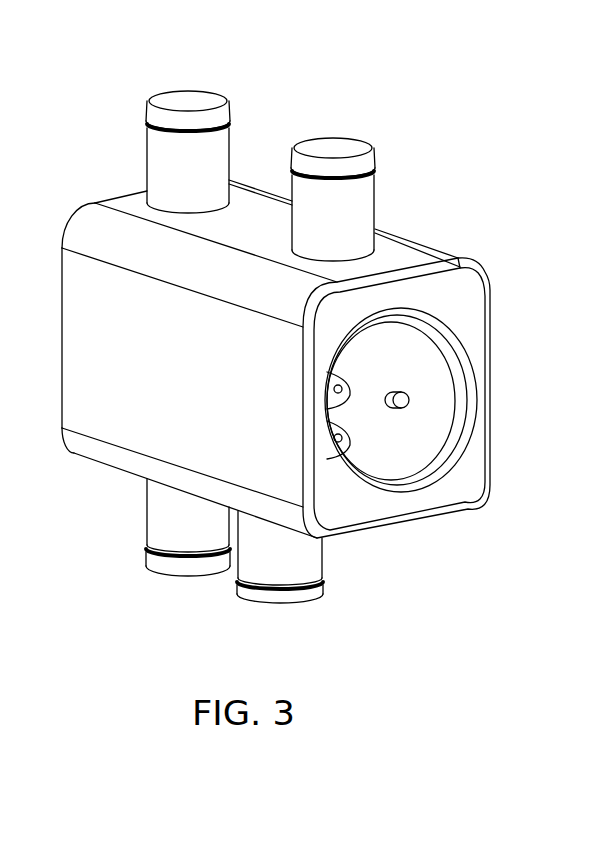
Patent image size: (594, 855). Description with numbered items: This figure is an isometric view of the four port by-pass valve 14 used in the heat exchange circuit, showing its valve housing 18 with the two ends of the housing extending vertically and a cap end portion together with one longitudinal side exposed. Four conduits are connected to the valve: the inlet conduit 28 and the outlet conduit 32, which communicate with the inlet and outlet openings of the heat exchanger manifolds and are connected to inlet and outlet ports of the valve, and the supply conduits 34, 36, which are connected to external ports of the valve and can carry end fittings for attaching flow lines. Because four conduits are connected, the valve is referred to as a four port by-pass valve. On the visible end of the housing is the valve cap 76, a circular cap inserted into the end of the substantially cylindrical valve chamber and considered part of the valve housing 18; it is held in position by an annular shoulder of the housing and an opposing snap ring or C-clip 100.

The by-pass valve 14 is at (316, 345).
The valve housing 18 is at (413, 253).
The inlet conduit 28 is at (217, 162).
The outlet conduit 32 is at (367, 187).
The supply conduit 34 is at (310, 558).
The supply conduit 36 is at (160, 507).
The valve cap 76 is at (443, 390).
The C-clip 100 is at (458, 353).